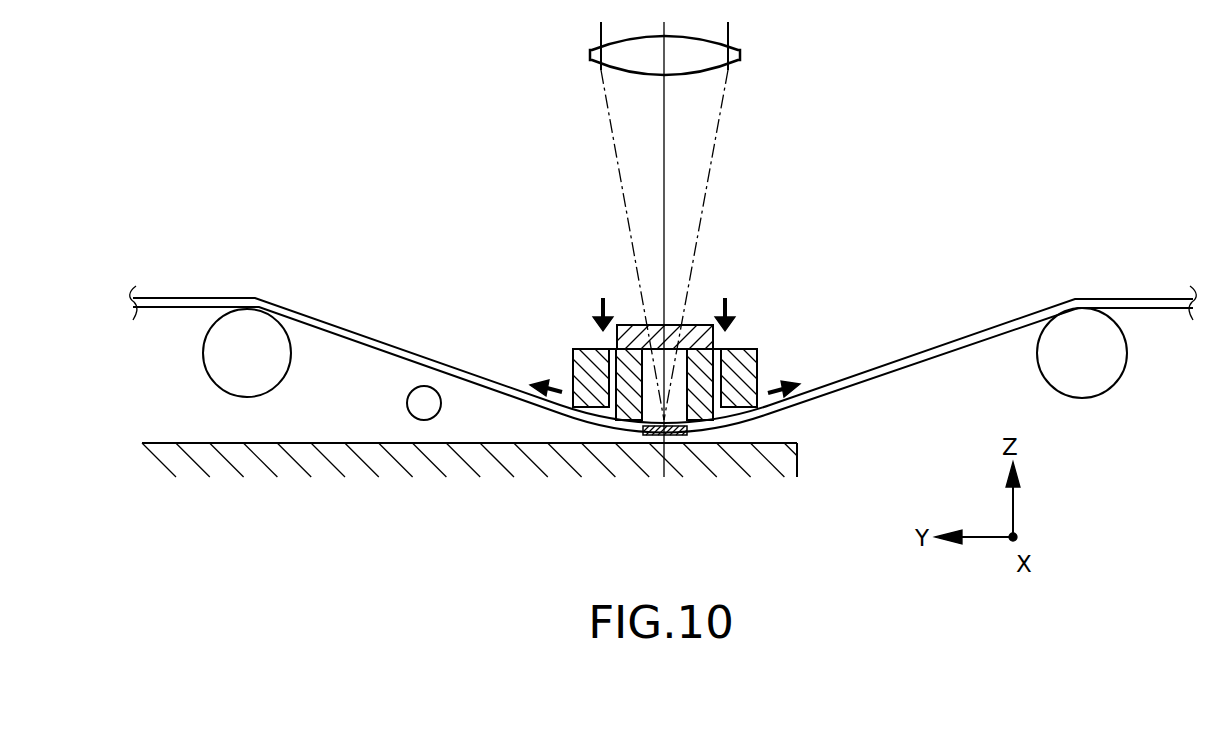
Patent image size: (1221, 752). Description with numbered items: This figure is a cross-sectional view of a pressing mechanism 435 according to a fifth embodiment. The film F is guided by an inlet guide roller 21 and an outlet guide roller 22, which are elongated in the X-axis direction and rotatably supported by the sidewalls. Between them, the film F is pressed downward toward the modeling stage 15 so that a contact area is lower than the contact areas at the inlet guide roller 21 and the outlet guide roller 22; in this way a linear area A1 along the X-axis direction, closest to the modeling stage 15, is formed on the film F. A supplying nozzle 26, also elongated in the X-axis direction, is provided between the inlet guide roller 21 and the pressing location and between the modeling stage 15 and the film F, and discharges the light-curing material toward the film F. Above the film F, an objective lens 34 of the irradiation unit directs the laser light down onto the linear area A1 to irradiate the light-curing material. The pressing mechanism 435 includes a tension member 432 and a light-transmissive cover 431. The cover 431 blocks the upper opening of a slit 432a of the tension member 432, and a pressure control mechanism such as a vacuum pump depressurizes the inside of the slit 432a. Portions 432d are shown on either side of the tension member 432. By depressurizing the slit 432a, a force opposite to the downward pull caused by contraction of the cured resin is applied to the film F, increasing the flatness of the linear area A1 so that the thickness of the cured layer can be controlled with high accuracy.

The objective lens 34 is at (741, 52).
The inlet guide roller 21 is at (245, 330).
The outlet guide roller 22 is at (1088, 330).
The supplying nozzle 26 is at (425, 393).
The film F is at (367, 335).
The modeling stage 15 is at (160, 458).
The pressing mechanism 435 is at (748, 277).
The cover 431 is at (698, 328).
The tension member 432 is at (758, 363).
The slit 432a is at (650, 347).
The groove 432d is at (612, 358).
The linear area A1 is at (652, 437).